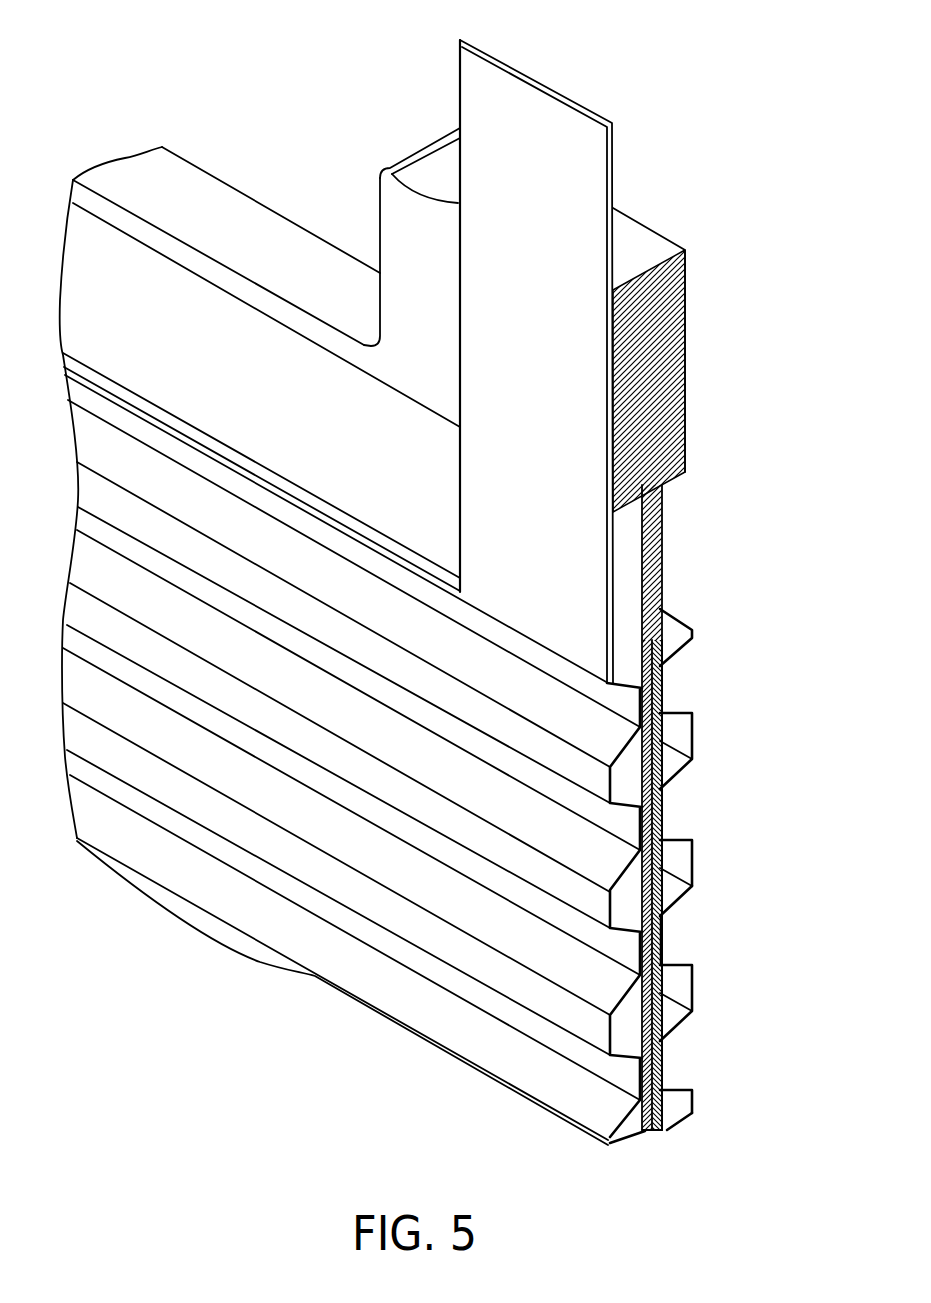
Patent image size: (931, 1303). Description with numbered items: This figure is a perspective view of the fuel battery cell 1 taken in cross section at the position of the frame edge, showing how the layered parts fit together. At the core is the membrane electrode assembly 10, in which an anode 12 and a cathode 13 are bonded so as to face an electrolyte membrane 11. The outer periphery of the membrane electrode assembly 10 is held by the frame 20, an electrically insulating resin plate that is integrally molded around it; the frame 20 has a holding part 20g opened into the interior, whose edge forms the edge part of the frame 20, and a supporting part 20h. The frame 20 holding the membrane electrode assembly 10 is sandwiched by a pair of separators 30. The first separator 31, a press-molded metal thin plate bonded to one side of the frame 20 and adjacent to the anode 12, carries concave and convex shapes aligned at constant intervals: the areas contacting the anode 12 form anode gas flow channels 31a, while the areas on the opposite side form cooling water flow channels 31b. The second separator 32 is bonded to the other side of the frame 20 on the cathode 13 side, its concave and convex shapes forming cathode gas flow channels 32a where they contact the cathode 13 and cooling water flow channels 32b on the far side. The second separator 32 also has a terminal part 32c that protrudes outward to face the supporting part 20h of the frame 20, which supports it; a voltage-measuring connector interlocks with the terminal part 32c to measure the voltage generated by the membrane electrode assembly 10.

The fuel battery cell 1 is at (45, 42).
The membrane electrode assembly 10 is at (740, 1148).
The electrolyte membrane 11 is at (657, 1131).
The anode 12 is at (668, 1128).
The cathode 13 is at (648, 1131).
The frame 20 is at (252, 197).
The holding part 20g is at (660, 686).
The supporting part 20h is at (640, 233).
The pair of separators 30 is at (747, 830).
The first separator 31 is at (695, 848).
The anode gas flow channels 31a is at (668, 890).
The cooling water flow channels 31b is at (670, 933).
The second separator 32 is at (636, 910).
The cathode gas flow channels 32a is at (640, 934).
The cooling water flow channels 32b is at (644, 978).
The terminal part 32c is at (465, 95).